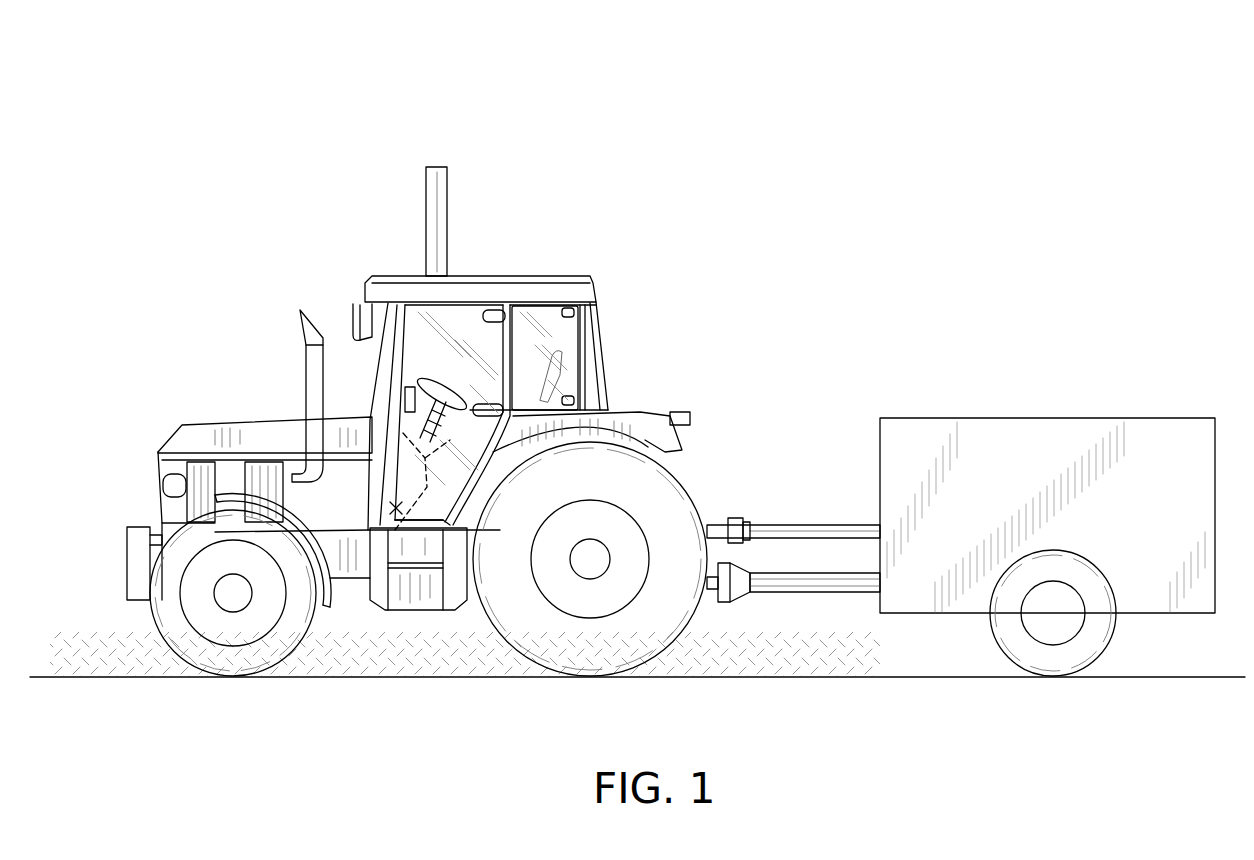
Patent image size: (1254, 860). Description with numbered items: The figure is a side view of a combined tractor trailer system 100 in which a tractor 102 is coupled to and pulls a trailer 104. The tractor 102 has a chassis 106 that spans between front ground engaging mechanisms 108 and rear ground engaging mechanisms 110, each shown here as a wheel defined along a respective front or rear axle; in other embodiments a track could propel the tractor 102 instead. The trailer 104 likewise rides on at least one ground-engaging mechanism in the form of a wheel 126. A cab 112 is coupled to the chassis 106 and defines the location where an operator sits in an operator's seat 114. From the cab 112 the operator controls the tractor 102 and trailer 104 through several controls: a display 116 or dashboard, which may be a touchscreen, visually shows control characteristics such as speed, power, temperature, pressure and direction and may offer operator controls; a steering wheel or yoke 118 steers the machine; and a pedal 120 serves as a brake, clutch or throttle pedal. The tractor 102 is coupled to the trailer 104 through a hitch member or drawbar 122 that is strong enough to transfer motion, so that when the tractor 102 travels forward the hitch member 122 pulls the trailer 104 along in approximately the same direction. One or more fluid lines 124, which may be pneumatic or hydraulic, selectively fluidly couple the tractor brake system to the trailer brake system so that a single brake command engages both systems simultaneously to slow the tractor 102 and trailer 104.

The combined tractor trailer system 100 is at (148, 130).
The tractor 102 is at (374, 247).
The trailer 104 is at (1012, 418).
The chassis 106 is at (363, 575).
The front ground engaging mechanisms 108 is at (233, 662).
The rear ground engaging mechanisms 110 is at (590, 652).
The cab 112 is at (472, 325).
The operator's seat 114 is at (548, 362).
The display 116 is at (410, 395).
The steering wheel or yoke 118 is at (427, 382).
The pedal 120 is at (405, 512).
The hitch member or drawbar 122 is at (738, 590).
The fluid lines 124 is at (712, 527).
The wheel 126 is at (1055, 675).